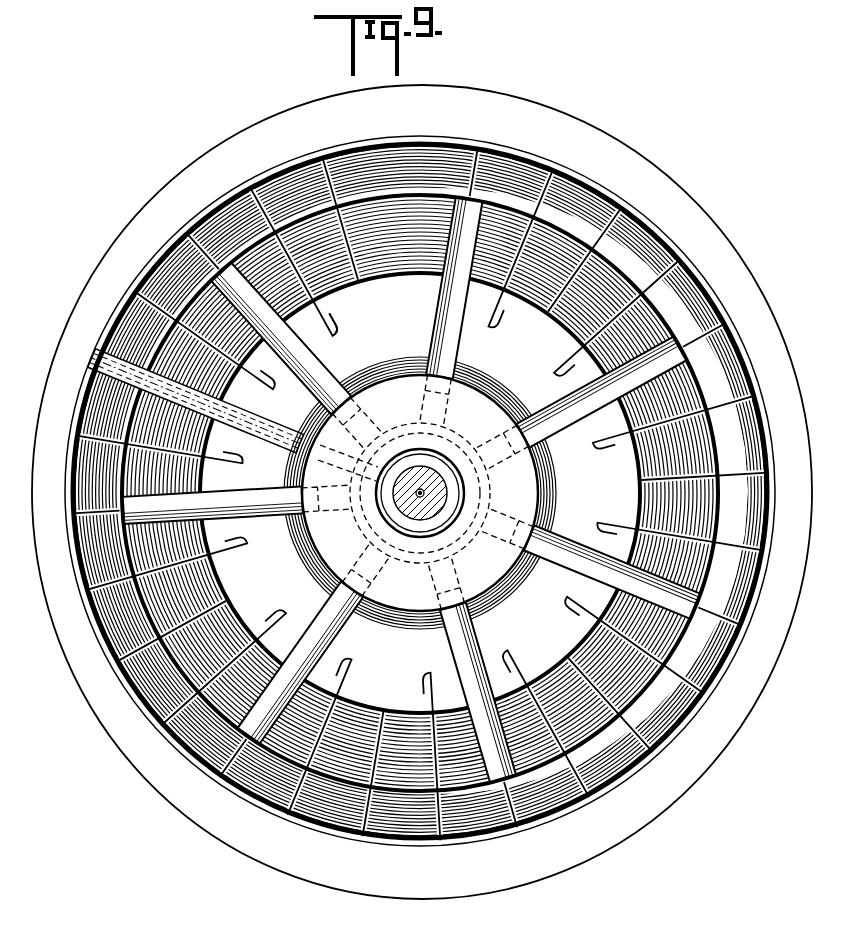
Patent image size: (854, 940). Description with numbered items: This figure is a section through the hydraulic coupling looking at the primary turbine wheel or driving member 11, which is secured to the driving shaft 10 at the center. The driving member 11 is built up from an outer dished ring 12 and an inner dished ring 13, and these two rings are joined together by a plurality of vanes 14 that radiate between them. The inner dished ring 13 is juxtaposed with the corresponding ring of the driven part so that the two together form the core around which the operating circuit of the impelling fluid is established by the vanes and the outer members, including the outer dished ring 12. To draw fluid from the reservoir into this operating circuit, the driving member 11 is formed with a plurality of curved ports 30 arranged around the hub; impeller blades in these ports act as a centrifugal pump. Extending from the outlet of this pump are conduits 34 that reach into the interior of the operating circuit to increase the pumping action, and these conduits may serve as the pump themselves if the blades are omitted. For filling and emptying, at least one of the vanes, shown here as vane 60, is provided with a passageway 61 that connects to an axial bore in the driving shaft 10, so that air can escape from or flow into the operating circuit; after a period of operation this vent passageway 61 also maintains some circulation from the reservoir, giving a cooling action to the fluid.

The driving shaft 10 is at (428, 520).
The primary turbine wheel or driving member 11 is at (690, 303).
The outer dished ring 12 is at (725, 374).
The inner dished ring 13 is at (693, 449).
The vanes 14 is at (301, 264).
The curved ports 30 is at (486, 437).
The conduits 34 is at (322, 352).
The vane 60 is at (250, 421).
The passageway 61 is at (337, 466).